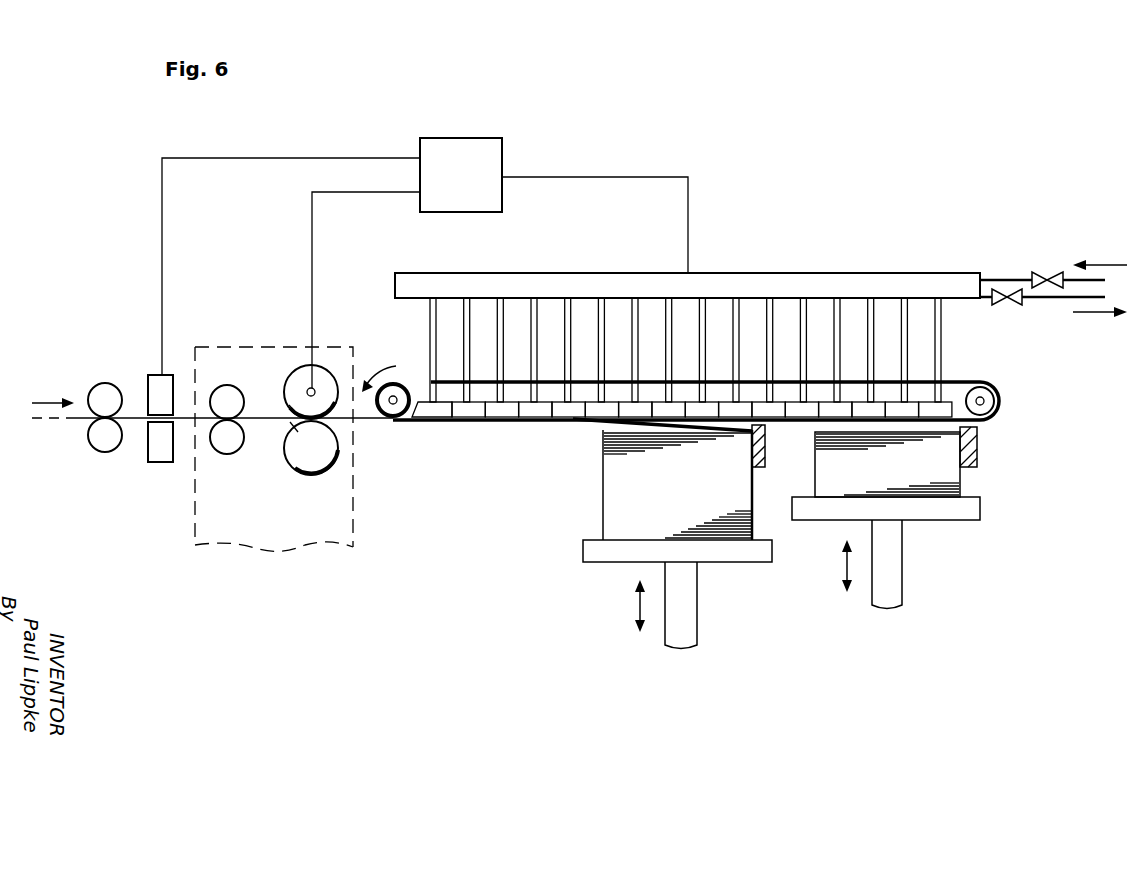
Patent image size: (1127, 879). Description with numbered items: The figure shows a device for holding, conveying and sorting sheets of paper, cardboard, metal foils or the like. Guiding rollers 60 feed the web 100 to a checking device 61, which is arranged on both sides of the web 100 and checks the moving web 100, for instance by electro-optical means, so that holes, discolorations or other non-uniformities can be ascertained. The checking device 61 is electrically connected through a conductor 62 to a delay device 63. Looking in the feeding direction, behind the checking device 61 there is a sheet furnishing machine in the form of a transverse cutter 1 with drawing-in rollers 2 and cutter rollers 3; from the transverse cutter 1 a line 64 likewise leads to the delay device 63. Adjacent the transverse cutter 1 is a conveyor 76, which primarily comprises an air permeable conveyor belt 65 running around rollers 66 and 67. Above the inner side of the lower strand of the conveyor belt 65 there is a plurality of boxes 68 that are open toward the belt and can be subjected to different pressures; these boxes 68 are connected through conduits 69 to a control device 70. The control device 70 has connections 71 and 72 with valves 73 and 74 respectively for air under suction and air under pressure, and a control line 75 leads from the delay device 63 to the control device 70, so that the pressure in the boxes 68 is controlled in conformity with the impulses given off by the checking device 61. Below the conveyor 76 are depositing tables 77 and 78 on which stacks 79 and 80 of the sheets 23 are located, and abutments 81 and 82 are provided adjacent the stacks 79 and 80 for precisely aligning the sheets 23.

The transverse cutter 1 is at (263, 345).
The drawing-in rollers 2 is at (231, 425).
The cutter rollers 3 is at (325, 435).
The sheets 23 is at (362, 422).
The guiding rollers 60 is at (112, 430).
The checking device 61 is at (152, 436).
The conductor 62 is at (165, 196).
The delay device 63 is at (493, 166).
The line 64 is at (312, 208).
The conveyor belt 65 is at (922, 382).
The roller 66 is at (398, 384).
The roller 67 is at (996, 403).
The boxes 68 is at (523, 413).
The conduits 69 is at (800, 317).
The control device 70 is at (868, 284).
The connection 71 is at (995, 276).
The connection 72 is at (1055, 300).
The valve 73 is at (1040, 273).
The valve 74 is at (1000, 302).
The control line 75 is at (620, 175).
The conveyor 76 is at (472, 488).
The depositing table 77 is at (623, 552).
The depositing table 78 is at (832, 508).
The stack 79 is at (728, 510).
The stack 80 is at (942, 470).
The abutment 81 is at (765, 457).
The abutment 82 is at (977, 457).
The web 100 is at (67, 422).